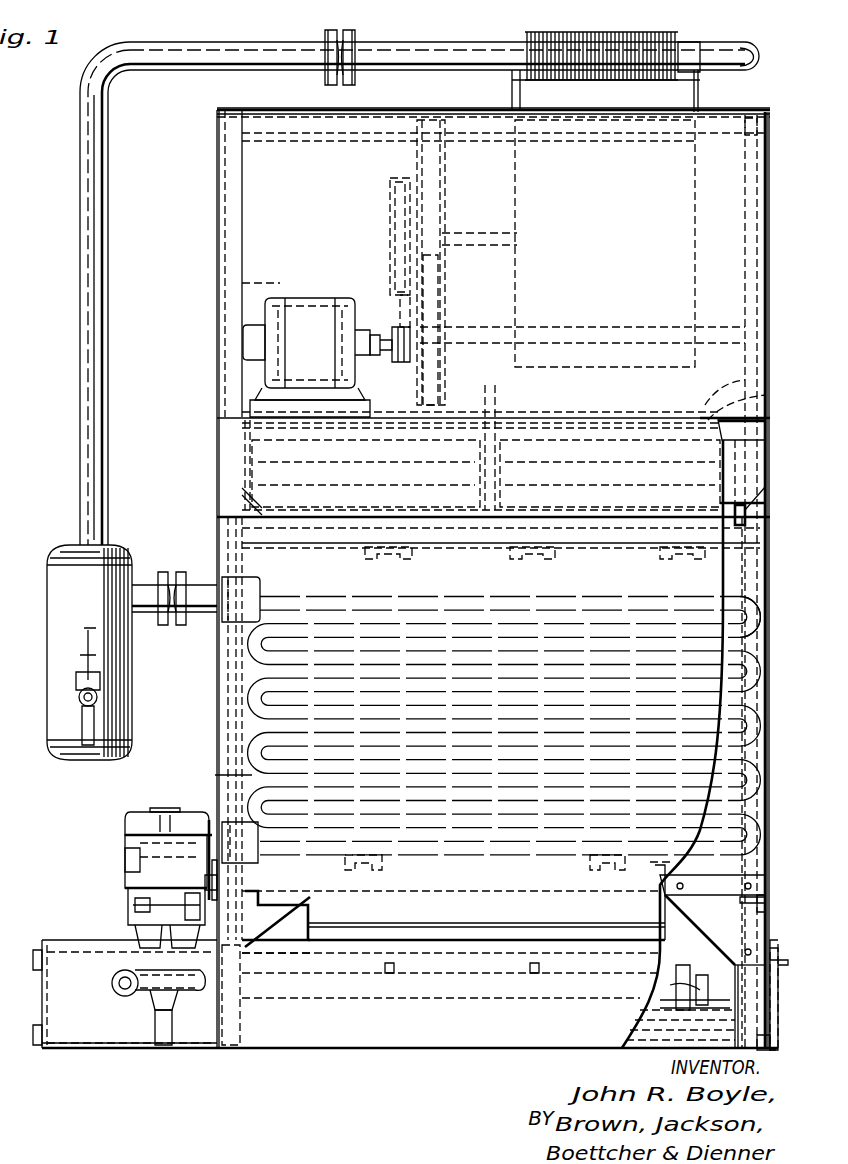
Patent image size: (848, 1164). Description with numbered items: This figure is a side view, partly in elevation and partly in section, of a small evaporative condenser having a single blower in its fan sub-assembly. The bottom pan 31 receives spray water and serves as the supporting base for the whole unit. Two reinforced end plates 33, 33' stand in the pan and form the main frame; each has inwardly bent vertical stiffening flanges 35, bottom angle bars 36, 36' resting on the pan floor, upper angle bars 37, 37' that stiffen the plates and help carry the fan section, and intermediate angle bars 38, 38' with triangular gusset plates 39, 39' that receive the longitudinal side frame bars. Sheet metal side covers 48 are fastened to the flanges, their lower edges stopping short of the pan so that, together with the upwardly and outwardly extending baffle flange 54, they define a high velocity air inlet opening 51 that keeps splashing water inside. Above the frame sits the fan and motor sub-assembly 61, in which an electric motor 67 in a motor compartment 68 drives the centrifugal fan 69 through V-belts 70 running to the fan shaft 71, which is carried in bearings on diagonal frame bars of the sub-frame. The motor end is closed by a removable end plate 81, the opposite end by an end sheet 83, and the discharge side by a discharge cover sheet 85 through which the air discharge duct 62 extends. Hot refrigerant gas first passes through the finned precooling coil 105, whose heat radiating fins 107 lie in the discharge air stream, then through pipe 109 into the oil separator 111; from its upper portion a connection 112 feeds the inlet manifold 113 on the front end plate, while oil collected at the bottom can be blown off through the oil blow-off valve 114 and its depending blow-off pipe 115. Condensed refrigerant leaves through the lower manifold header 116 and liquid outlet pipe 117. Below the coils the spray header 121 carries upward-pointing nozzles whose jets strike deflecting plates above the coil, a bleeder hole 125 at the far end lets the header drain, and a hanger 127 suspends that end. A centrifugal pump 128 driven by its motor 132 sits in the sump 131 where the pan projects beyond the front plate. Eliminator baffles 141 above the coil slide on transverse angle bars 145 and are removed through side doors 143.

The bottom pan 31 is at (105, 1048).
The front end plate 33 is at (198, 728).
The rear end plate 33' is at (713, 744).
The vertical stiffening flange 35 is at (193, 728).
The bottom angle bar 36 is at (221, 1017).
The bottom angle bar 36' is at (783, 1051).
The upper angle bar 37 is at (437, 444).
The upper angle bar 37' is at (761, 462).
The intermediate angle bar 38 is at (188, 879).
The intermediate angle bar 38' is at (772, 891).
The gusset plate 39 is at (277, 919).
The gusset plate 39' is at (712, 961).
The side cover 48 is at (214, 772).
The air inlet opening 51 is at (305, 945).
The baffle flange 54 is at (775, 960).
The fan and motor sub-assembly 61 is at (207, 191).
The air discharge duct 62 is at (692, 85).
The electric motor 67 is at (300, 312).
The motor compartment 68 is at (250, 288).
The fan 69 is at (530, 175).
The V-belt 70 is at (395, 278).
The fan shaft 71 is at (488, 242).
The removable end plate 81 is at (217, 332).
The end sheet 83 is at (768, 306).
The discharge cover sheet 85 is at (388, 112).
The precooling coil 105 is at (440, 48).
The heat radiating fins 107 is at (665, 30).
The pipe 109 is at (80, 237).
The oil separator 111 is at (112, 548).
The connection 112 is at (155, 617).
The inlet manifold 113 is at (232, 605).
The oil blow-off valve 114 is at (100, 678).
The blow-off pipe 115 is at (92, 728).
The lower manifold header 116 is at (240, 825).
The liquid outlet pipe 117 is at (172, 841).
The spray header 121 is at (440, 990).
The bleeder hole 125 is at (688, 1000).
The hanger 127 is at (655, 875).
The centrifugal pump 128 is at (135, 1002).
The sump 131 is at (88, 962).
The motor 132 is at (126, 877).
The eliminator baffles 141 is at (492, 420).
The side door 143 is at (265, 470).
The angle bar 145 is at (746, 517).